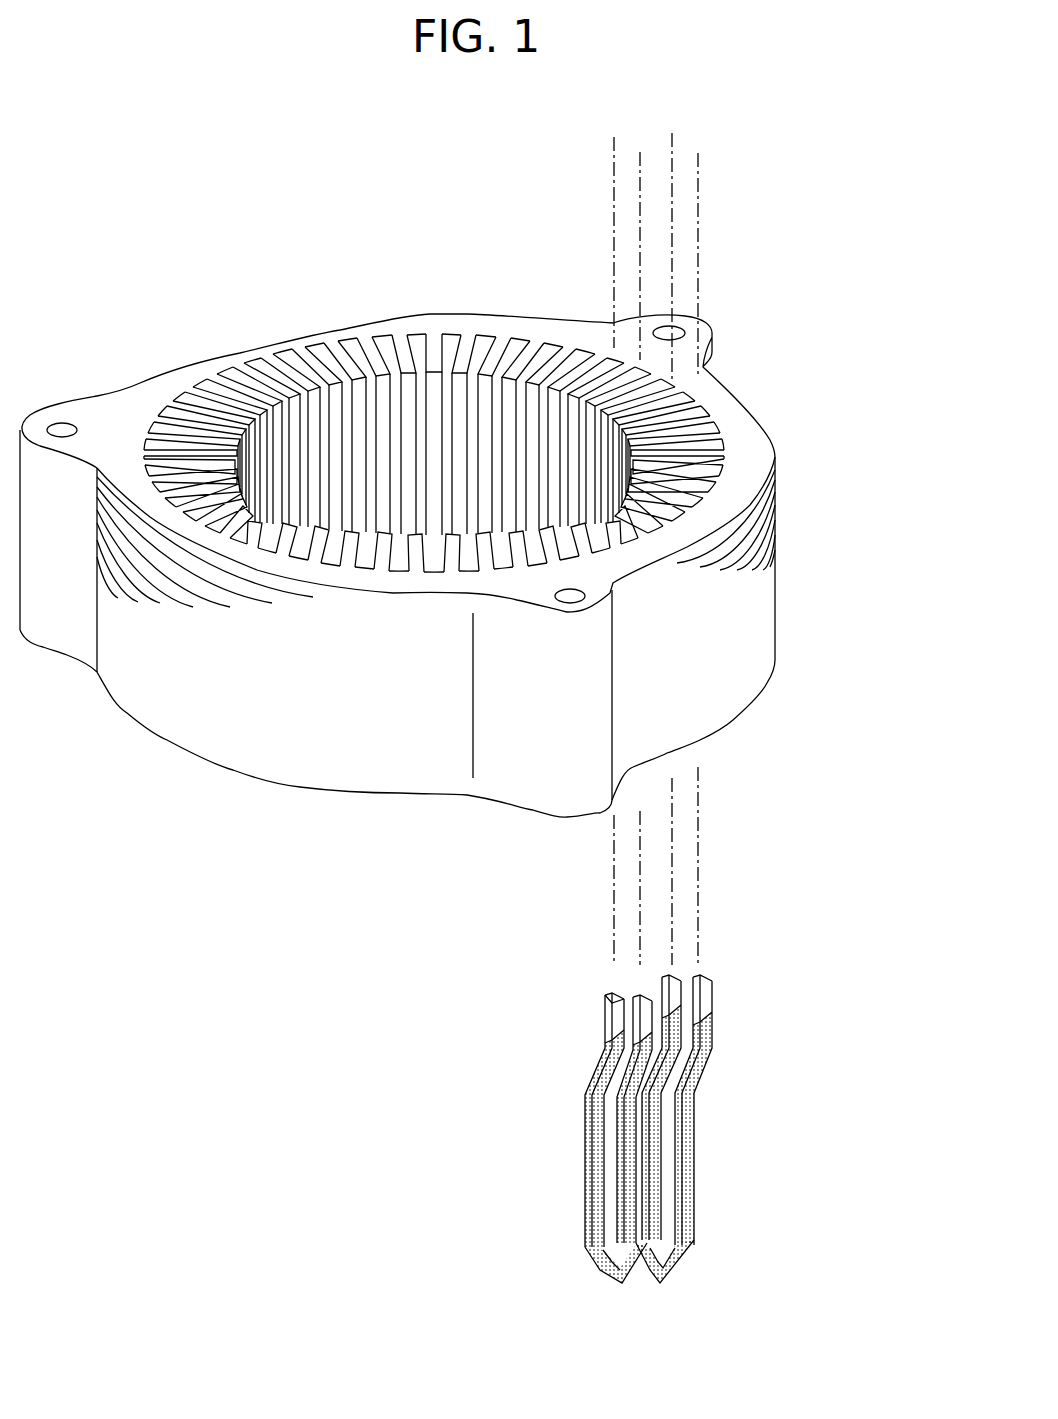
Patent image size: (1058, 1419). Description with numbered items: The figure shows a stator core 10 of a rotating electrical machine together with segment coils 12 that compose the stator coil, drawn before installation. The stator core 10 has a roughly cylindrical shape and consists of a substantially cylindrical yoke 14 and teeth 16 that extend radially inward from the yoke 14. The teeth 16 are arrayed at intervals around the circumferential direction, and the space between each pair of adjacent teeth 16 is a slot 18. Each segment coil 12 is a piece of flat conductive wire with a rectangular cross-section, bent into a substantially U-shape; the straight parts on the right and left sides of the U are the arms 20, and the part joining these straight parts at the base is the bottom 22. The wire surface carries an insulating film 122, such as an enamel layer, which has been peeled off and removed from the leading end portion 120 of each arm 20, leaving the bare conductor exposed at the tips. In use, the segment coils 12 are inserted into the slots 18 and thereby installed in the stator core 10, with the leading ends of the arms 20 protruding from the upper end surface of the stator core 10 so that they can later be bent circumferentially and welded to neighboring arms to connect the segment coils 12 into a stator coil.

The stator core 10 is at (745, 605).
The segment coil 12 is at (656, 1142).
The yoke 14 is at (185, 373).
The teeth 16 is at (278, 358).
The slot 18 is at (298, 360).
The arms 20 is at (695, 1090).
The bottom 22 is at (690, 1250).
The leading end portion 120 is at (603, 1020).
The insulating film 122 is at (593, 1142).